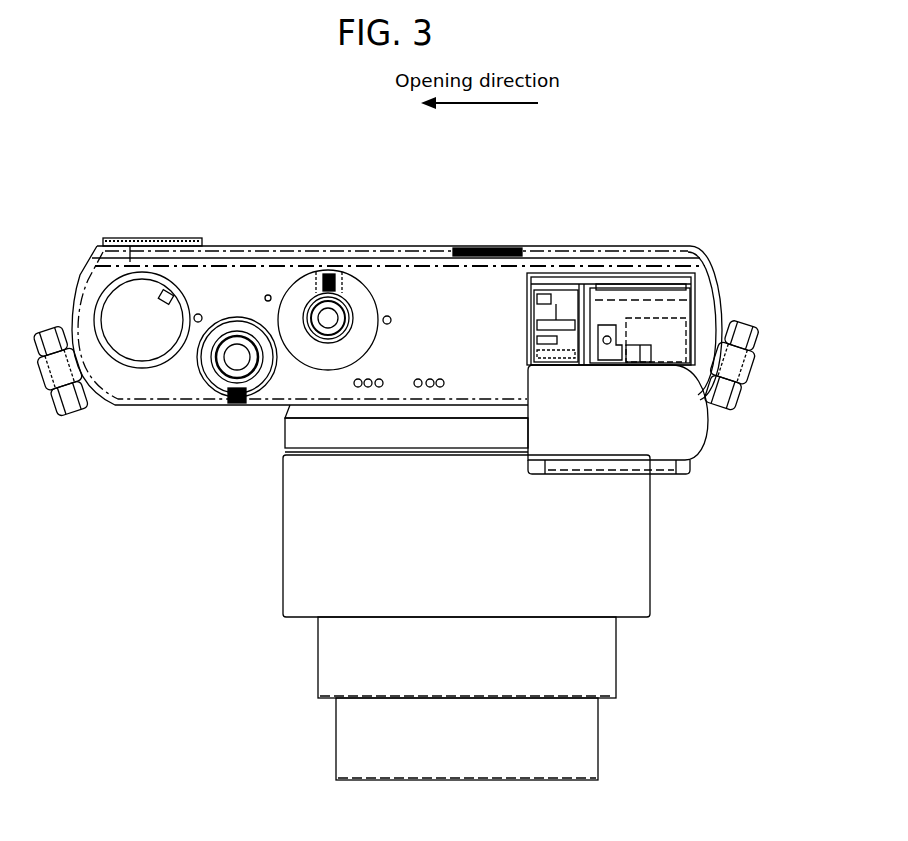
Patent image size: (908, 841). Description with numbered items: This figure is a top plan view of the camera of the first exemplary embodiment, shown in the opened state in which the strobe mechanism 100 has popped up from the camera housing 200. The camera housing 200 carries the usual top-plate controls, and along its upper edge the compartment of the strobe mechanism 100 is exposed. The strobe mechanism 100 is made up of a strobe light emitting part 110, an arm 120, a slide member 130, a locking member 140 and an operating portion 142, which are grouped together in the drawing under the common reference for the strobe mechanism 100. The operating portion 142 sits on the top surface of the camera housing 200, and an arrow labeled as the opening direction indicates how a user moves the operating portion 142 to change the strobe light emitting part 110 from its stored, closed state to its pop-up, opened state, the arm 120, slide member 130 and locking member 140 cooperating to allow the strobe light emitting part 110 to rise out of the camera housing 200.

The strobe mechanism 100 is at (820, 58).
The strobe light emitting part 110 is at (657, 467).
The arm 120 is at (668, 358).
The slide member 130 is at (610, 310).
The locking member 140 is at (540, 327).
The operating portion 142 is at (490, 254).
The camera housing 200 is at (418, 295).